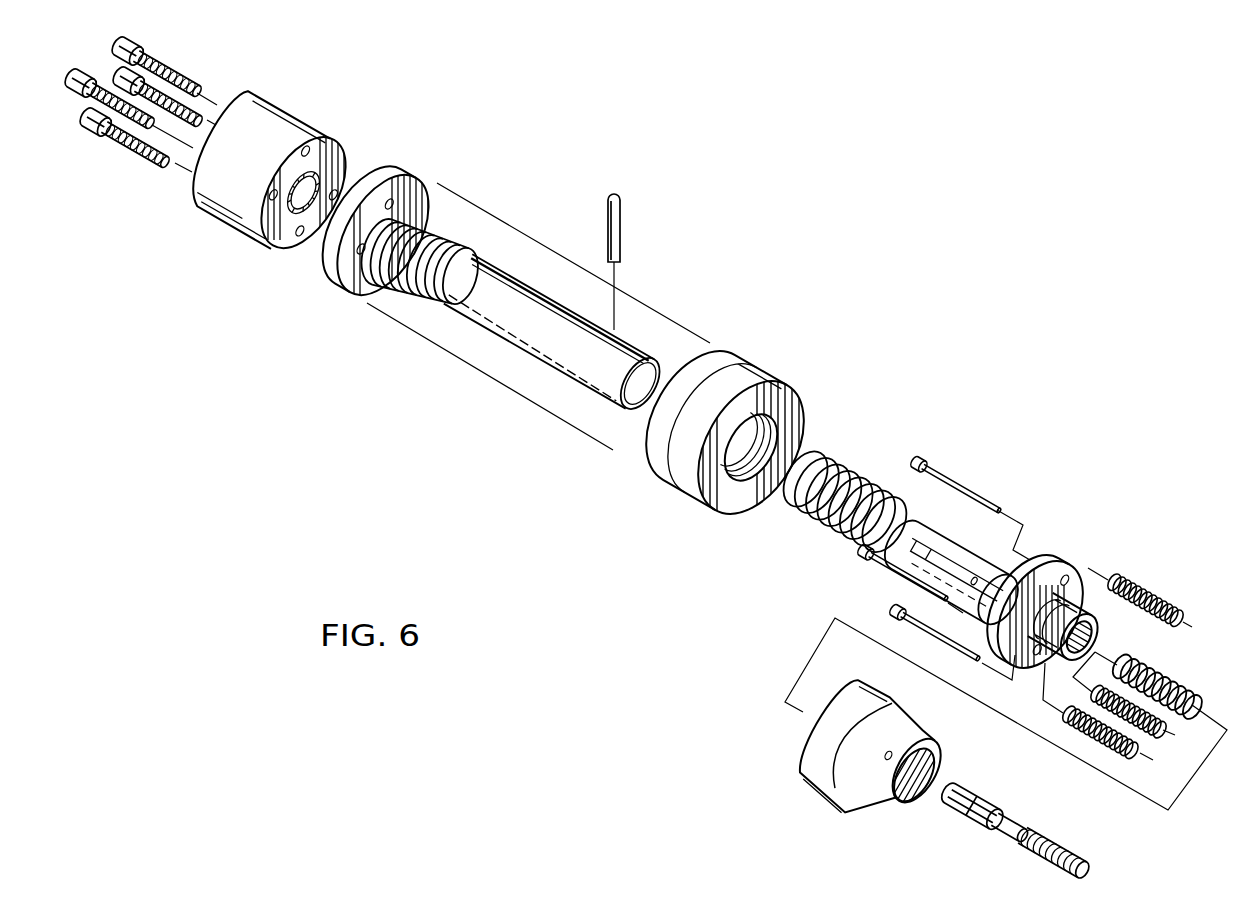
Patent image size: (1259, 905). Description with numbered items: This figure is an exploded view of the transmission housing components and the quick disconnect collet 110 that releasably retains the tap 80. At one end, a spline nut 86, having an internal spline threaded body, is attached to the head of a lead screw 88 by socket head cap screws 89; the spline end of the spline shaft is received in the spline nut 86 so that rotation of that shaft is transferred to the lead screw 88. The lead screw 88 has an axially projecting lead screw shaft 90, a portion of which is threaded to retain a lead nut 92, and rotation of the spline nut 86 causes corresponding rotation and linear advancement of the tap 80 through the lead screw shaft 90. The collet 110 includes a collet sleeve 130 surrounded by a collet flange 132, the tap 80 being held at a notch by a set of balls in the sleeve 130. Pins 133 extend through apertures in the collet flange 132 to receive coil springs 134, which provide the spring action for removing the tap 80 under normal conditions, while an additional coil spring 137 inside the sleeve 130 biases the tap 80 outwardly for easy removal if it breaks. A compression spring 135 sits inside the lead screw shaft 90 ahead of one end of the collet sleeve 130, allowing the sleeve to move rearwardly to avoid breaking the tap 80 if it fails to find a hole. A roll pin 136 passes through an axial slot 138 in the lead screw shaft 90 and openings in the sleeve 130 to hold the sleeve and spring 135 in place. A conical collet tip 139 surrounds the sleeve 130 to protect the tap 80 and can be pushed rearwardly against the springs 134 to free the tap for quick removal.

The tap 80 is at (1017, 823).
The spline nut 86 is at (293, 108).
The lead screw 88 is at (390, 170).
The socket head cap screws 89 is at (207, 105).
The lead screw shaft 90 is at (503, 277).
The lead nut 92 is at (747, 360).
The quick disconnect collet 110 is at (1062, 527).
The collet sleeve 130 is at (943, 537).
The collet flange 132 is at (1060, 563).
The pins 133 is at (940, 477).
The coil springs 134 is at (1150, 597).
The compression spring 135 is at (840, 477).
The roll pin 136 is at (622, 215).
The coil spring 137 is at (1170, 678).
The axial slot 138 is at (617, 343).
The conical collet tip 139 is at (800, 743).